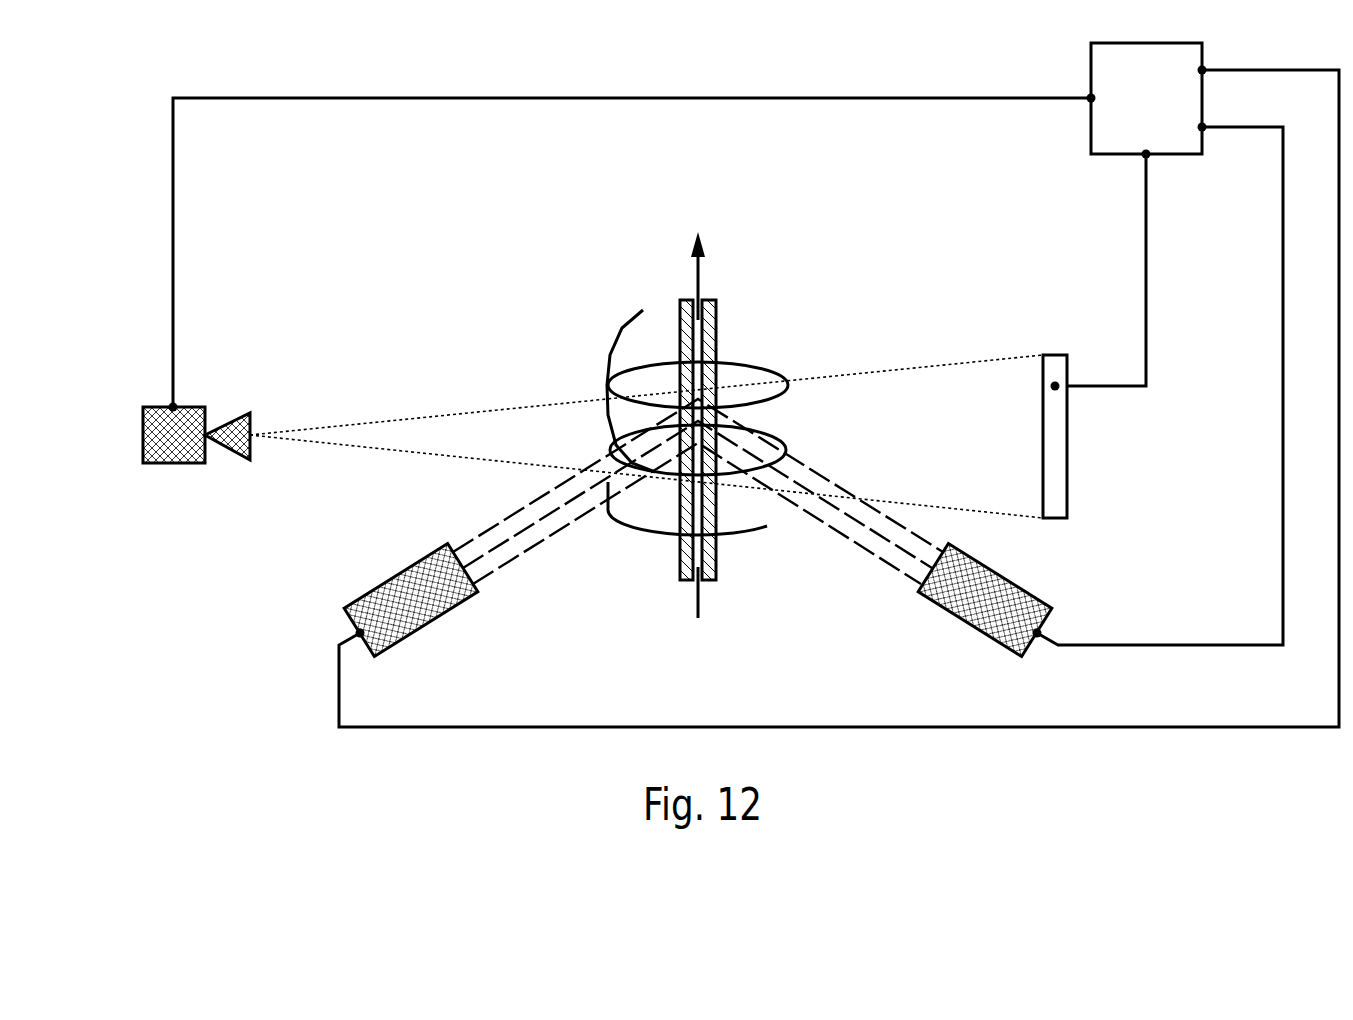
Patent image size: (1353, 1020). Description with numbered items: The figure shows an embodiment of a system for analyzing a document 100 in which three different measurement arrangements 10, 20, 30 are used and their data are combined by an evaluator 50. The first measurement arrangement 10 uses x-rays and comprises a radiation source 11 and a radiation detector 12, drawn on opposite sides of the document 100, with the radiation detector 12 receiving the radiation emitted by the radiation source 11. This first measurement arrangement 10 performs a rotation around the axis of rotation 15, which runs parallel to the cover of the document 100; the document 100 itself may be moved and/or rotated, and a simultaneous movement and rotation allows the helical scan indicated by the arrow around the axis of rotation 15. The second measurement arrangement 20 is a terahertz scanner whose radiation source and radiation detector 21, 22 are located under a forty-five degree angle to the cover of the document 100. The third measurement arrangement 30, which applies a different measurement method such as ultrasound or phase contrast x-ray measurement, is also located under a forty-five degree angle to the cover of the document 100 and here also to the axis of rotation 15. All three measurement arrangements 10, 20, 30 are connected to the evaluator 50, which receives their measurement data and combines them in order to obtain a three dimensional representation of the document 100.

The first measurement arrangement 10 is at (155, 511).
The radiation source 11 is at (142, 440).
The radiation detector 12 is at (1068, 434).
The axis of rotation 15 is at (697, 270).
The second measurement arrangement 20 is at (375, 601).
The radiation source 21 is at (424, 619).
The radiation detector 22 is at (432, 623).
The third measurement arrangement 30 is at (963, 623).
The evaluator 50 is at (1160, 112).
The document 100 is at (718, 315).